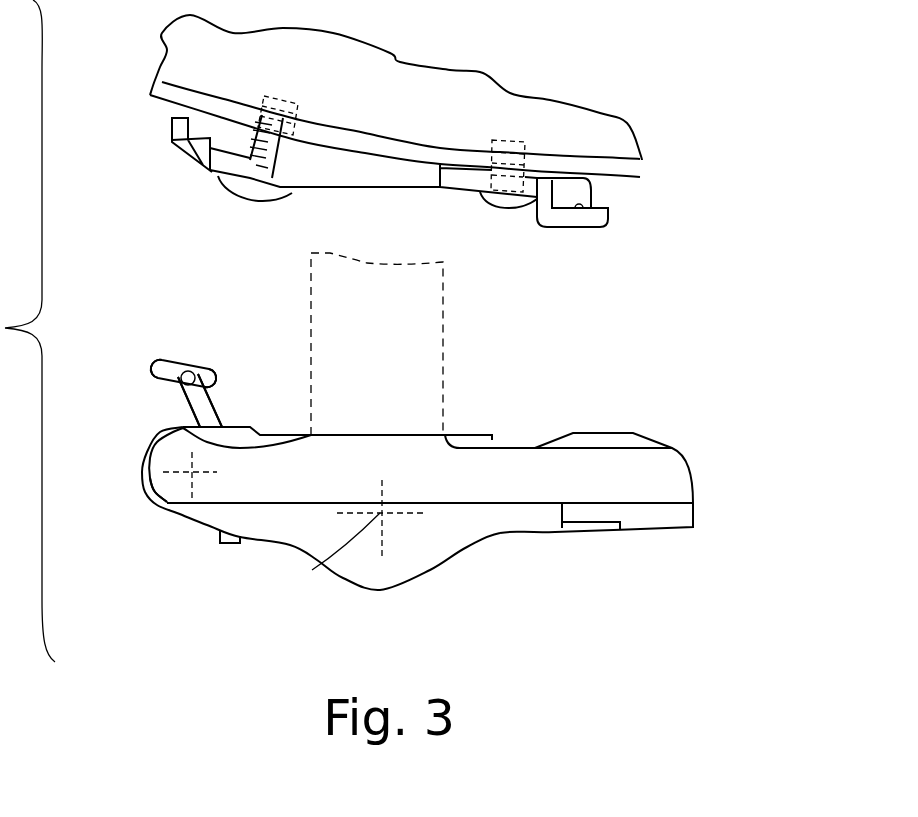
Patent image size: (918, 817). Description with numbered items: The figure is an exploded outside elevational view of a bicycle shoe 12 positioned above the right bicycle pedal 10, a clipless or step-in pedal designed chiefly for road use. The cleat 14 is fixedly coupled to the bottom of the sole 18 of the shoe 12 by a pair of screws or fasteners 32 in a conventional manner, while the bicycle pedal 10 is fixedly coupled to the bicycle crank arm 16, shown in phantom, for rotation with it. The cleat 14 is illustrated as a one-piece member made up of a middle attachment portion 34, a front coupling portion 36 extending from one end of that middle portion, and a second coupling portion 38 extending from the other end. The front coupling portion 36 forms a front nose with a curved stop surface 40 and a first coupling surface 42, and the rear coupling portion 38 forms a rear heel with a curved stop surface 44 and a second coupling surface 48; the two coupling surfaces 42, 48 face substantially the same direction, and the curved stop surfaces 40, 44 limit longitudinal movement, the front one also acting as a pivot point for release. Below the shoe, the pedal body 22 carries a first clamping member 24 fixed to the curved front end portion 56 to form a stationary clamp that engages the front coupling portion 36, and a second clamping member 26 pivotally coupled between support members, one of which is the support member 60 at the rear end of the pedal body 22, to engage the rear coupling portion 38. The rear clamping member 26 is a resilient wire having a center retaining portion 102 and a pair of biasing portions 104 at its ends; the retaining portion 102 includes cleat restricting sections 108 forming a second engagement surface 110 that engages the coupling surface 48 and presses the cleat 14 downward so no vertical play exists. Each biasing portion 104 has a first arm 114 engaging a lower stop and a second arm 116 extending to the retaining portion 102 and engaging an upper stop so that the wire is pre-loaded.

The bicycle pedal 10 is at (576, 412).
The bicycle shoe 12 is at (481, 75).
The cleat 14 is at (373, 190).
The bicycle crank arm 16 is at (443, 323).
The sole 18 is at (637, 178).
The pedal body 22 is at (510, 528).
The first clamping member 24 is at (593, 534).
The second clamping member 26 is at (175, 350).
The fasteners 32 is at (245, 197).
The middle attachment portion 34 is at (327, 188).
The front coupling portion 36 is at (565, 228).
The second coupling portion 38 is at (190, 165).
The curved stop surface 40 is at (593, 192).
The first coupling surface 42 is at (582, 203).
The curved stop surface 44 is at (170, 136).
The second coupling surface 48 is at (198, 137).
The curved front end portion 56 is at (670, 447).
The support member 60 is at (167, 490).
The center retaining portion 102 is at (152, 366).
The biasing portions 104 is at (147, 452).
The cleat restricting sections 108 is at (205, 371).
The second engagement surface 110 is at (213, 387).
The first arm 114 is at (230, 545).
The second arm 116 is at (214, 408).